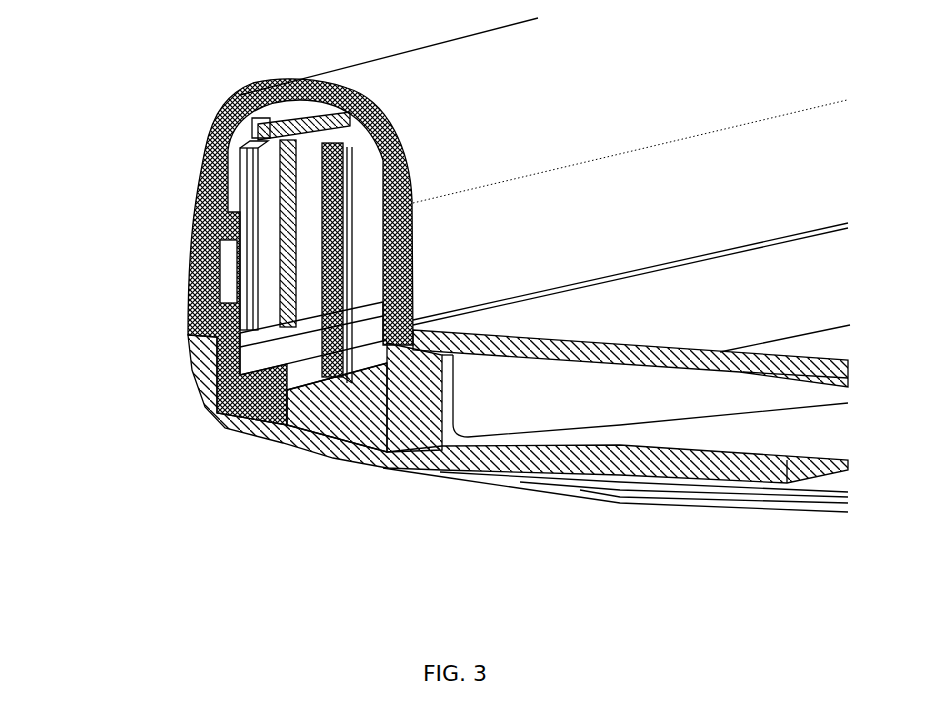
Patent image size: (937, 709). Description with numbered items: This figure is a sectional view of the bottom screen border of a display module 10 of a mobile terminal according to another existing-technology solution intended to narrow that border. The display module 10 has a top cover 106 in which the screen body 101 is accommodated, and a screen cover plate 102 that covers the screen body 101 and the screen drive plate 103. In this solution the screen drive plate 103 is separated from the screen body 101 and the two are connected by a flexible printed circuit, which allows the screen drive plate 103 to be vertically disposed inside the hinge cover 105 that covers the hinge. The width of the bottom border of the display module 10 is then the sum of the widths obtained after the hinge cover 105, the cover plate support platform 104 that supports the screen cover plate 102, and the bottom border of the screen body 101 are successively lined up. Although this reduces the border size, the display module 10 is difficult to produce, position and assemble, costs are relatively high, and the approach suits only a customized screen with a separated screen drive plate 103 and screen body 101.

The display module 10 is at (145, 263).
The screen body 101 is at (560, 397).
The screen cover plate 102 is at (720, 352).
The screen drive plate 103 is at (262, 440).
The cover plate support platform 104 is at (358, 460).
The hinge cover 105 is at (417, 67).
The top cover 106 is at (238, 433).